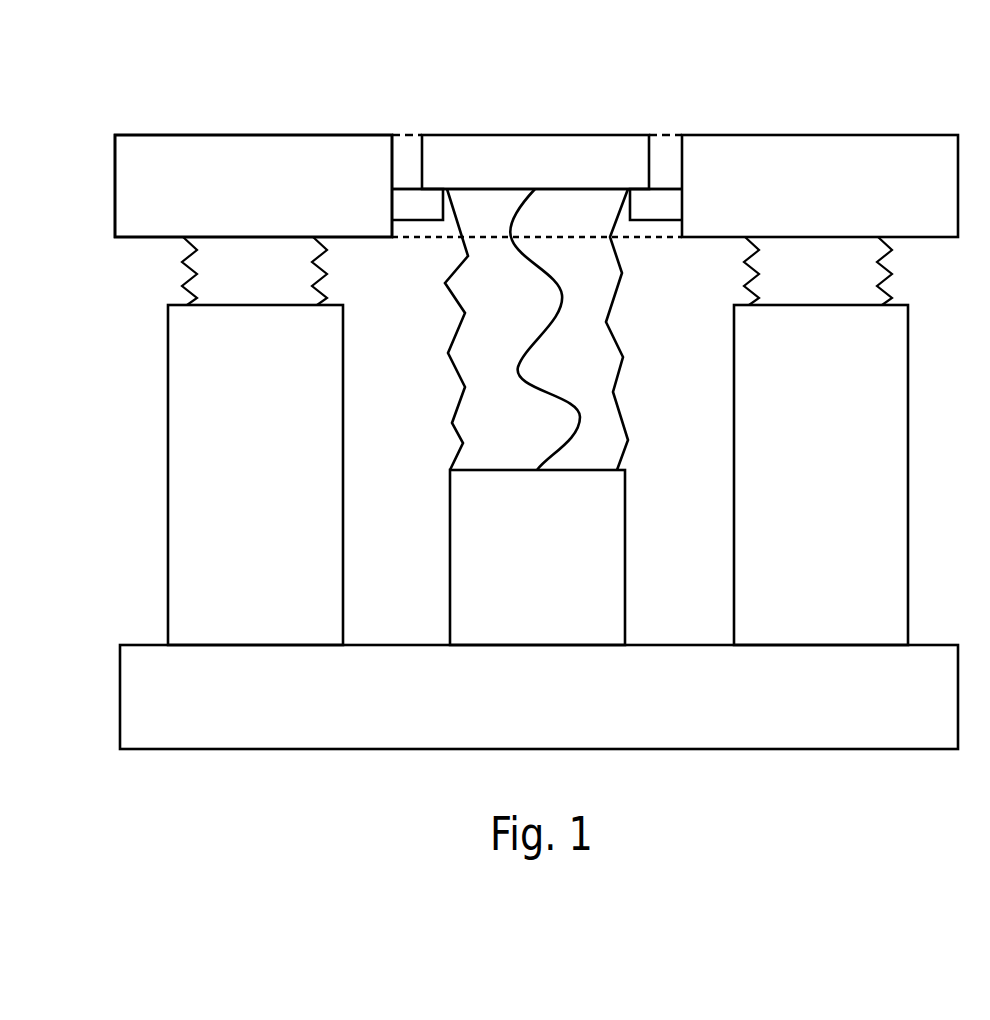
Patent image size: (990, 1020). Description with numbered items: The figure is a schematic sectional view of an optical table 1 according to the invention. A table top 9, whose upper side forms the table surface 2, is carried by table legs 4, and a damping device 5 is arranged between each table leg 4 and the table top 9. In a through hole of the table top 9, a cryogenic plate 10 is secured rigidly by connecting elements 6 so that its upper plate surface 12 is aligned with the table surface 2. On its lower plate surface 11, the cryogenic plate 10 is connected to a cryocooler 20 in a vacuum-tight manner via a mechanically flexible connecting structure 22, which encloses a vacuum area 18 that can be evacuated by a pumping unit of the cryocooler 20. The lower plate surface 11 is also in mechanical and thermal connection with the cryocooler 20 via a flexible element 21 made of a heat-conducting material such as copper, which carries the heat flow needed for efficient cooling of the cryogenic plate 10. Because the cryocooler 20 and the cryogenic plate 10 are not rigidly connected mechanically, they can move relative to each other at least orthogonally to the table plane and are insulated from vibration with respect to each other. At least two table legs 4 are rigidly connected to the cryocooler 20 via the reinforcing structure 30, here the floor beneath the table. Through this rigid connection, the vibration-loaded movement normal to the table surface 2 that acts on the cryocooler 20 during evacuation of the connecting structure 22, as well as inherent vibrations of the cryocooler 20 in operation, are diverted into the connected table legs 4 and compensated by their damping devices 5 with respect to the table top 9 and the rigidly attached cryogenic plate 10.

The optical table 1 is at (417, 80).
The table surface 2 is at (154, 128).
The table legs 4 is at (264, 486).
The damping device 5 is at (259, 284).
The connecting element 6 is at (426, 224).
The table top 9 is at (262, 203).
The cryogenic plate 10 is at (519, 174).
The lower plate surface 11 is at (604, 198).
The upper plate surface 12 is at (525, 128).
The vacuum area 18 is at (479, 336).
The cryocooler 20 is at (521, 571).
The flexible element 21 is at (545, 395).
The flexible connecting structure 22 is at (452, 423).
The reinforcing structure 30 is at (521, 711).